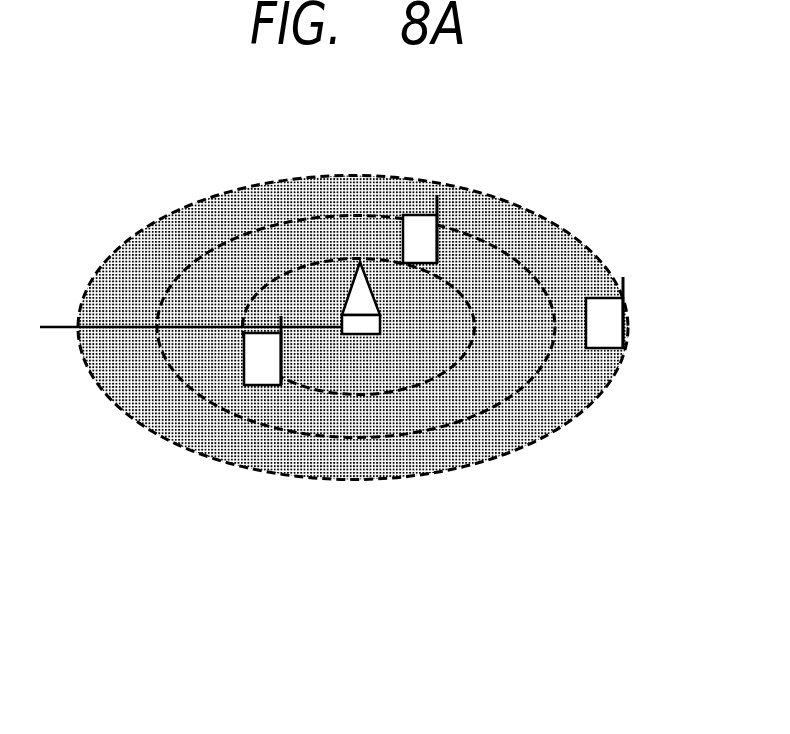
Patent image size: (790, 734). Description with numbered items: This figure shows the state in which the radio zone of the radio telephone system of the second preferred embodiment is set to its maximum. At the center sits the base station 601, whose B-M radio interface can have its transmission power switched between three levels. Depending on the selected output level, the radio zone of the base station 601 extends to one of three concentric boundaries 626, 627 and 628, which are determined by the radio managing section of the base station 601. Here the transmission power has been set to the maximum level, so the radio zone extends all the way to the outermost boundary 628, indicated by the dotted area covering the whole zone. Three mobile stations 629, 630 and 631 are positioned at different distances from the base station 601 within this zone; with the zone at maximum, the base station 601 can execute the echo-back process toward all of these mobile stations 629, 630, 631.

The base station 601 is at (360, 334).
The radio zone boundary 626 is at (343, 258).
The radio zone boundary 627 is at (256, 229).
The radio zone boundary 628 is at (157, 218).
The mobile station 629 is at (258, 385).
The mobile station 630 is at (417, 215).
The mobile station 631 is at (608, 348).